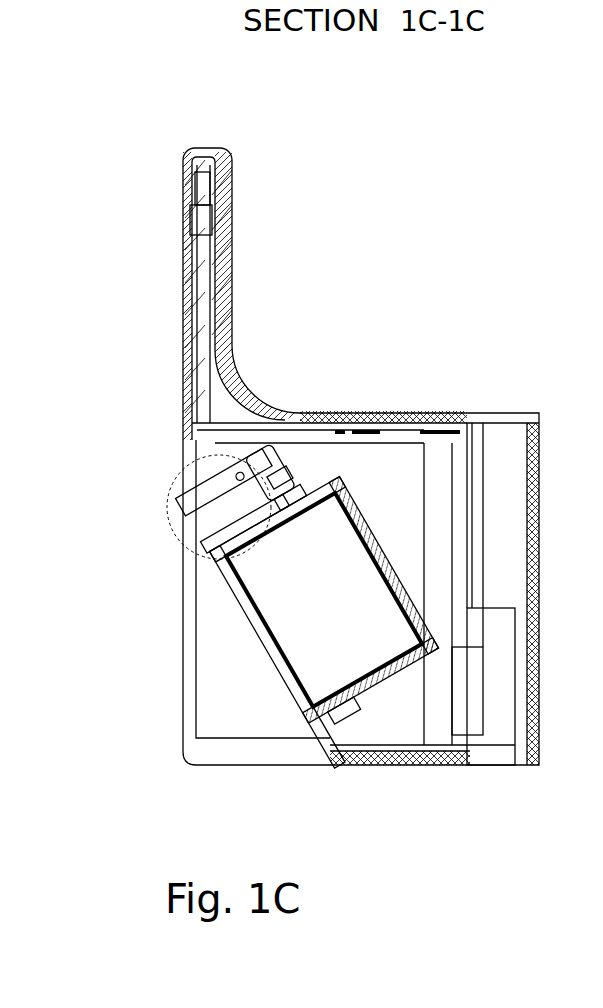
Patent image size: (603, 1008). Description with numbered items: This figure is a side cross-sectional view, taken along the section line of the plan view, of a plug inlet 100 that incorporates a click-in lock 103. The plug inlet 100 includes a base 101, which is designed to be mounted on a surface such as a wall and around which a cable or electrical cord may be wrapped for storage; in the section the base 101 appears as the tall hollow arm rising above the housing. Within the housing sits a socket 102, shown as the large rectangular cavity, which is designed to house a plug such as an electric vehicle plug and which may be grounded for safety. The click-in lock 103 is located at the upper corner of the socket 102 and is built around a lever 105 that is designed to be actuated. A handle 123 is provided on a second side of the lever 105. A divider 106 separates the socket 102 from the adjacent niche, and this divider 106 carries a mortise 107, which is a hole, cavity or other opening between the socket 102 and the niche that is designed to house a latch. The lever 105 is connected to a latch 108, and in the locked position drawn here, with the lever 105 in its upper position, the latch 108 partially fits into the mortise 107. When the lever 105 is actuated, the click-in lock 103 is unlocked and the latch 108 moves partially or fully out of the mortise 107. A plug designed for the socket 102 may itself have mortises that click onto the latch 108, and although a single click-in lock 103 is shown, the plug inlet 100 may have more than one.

The plug inlet 100 is at (446, 820).
The base 101 is at (183, 236).
The socket 102 is at (337, 623).
The click-in lock 103 is at (180, 535).
The lever 105 is at (212, 485).
The divider 106 is at (227, 530).
The mortise 107 is at (284, 484).
The latch 108 is at (282, 502).
The handle 123 is at (263, 462).